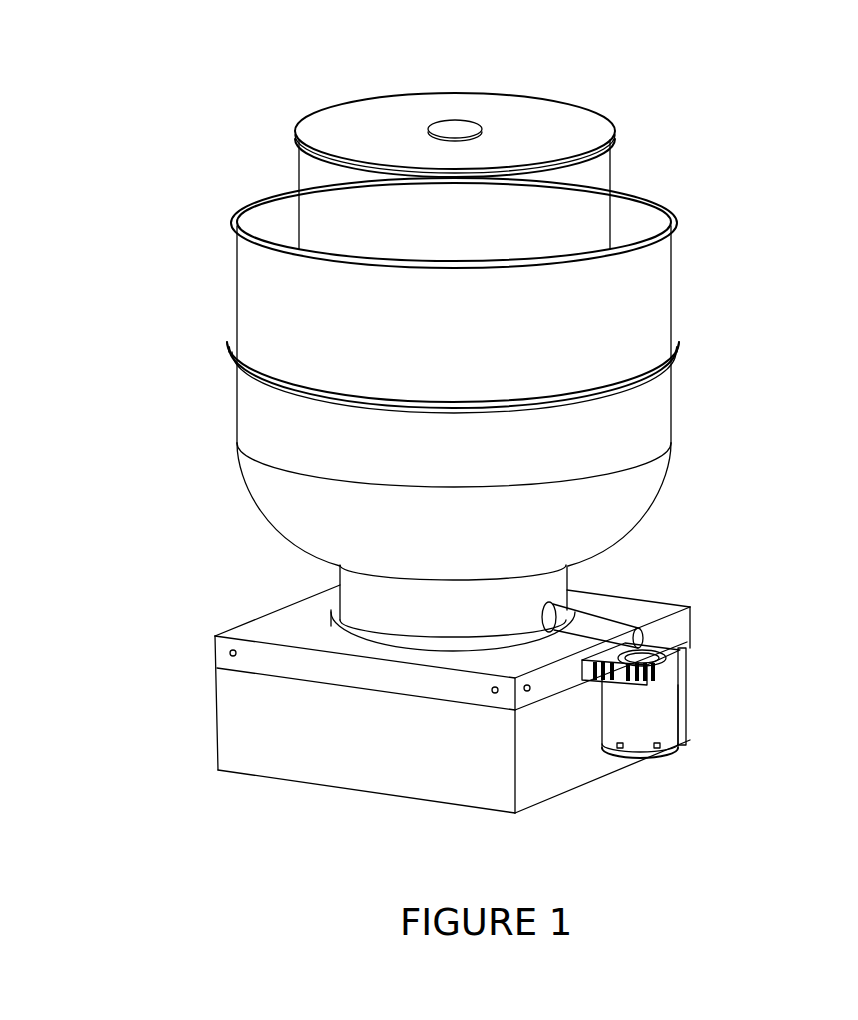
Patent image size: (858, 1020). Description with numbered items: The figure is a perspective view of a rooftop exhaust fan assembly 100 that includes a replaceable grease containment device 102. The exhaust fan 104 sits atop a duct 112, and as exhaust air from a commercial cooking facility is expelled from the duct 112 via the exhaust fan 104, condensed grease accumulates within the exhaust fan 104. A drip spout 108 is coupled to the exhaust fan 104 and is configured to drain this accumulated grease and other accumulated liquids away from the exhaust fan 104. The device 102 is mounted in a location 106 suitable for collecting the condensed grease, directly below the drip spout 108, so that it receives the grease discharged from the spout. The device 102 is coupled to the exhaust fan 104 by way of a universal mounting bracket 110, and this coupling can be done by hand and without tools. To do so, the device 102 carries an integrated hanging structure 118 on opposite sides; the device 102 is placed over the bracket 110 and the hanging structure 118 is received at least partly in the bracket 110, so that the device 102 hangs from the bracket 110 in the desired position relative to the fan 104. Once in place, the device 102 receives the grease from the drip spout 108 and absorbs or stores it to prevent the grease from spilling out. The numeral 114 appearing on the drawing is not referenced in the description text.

The rooftop exhaust fan assembly 100 is at (763, 92).
The top cap 114 is at (233, 197).
The exhaust fan 104 is at (673, 267).
The location 106 is at (725, 587).
The drip spout 108 is at (608, 620).
The universal mounting bracket 110 is at (650, 692).
The integrated hanging structure 118 is at (625, 680).
The replaceable grease containment device 102 is at (688, 687).
The duct 112 is at (365, 793).